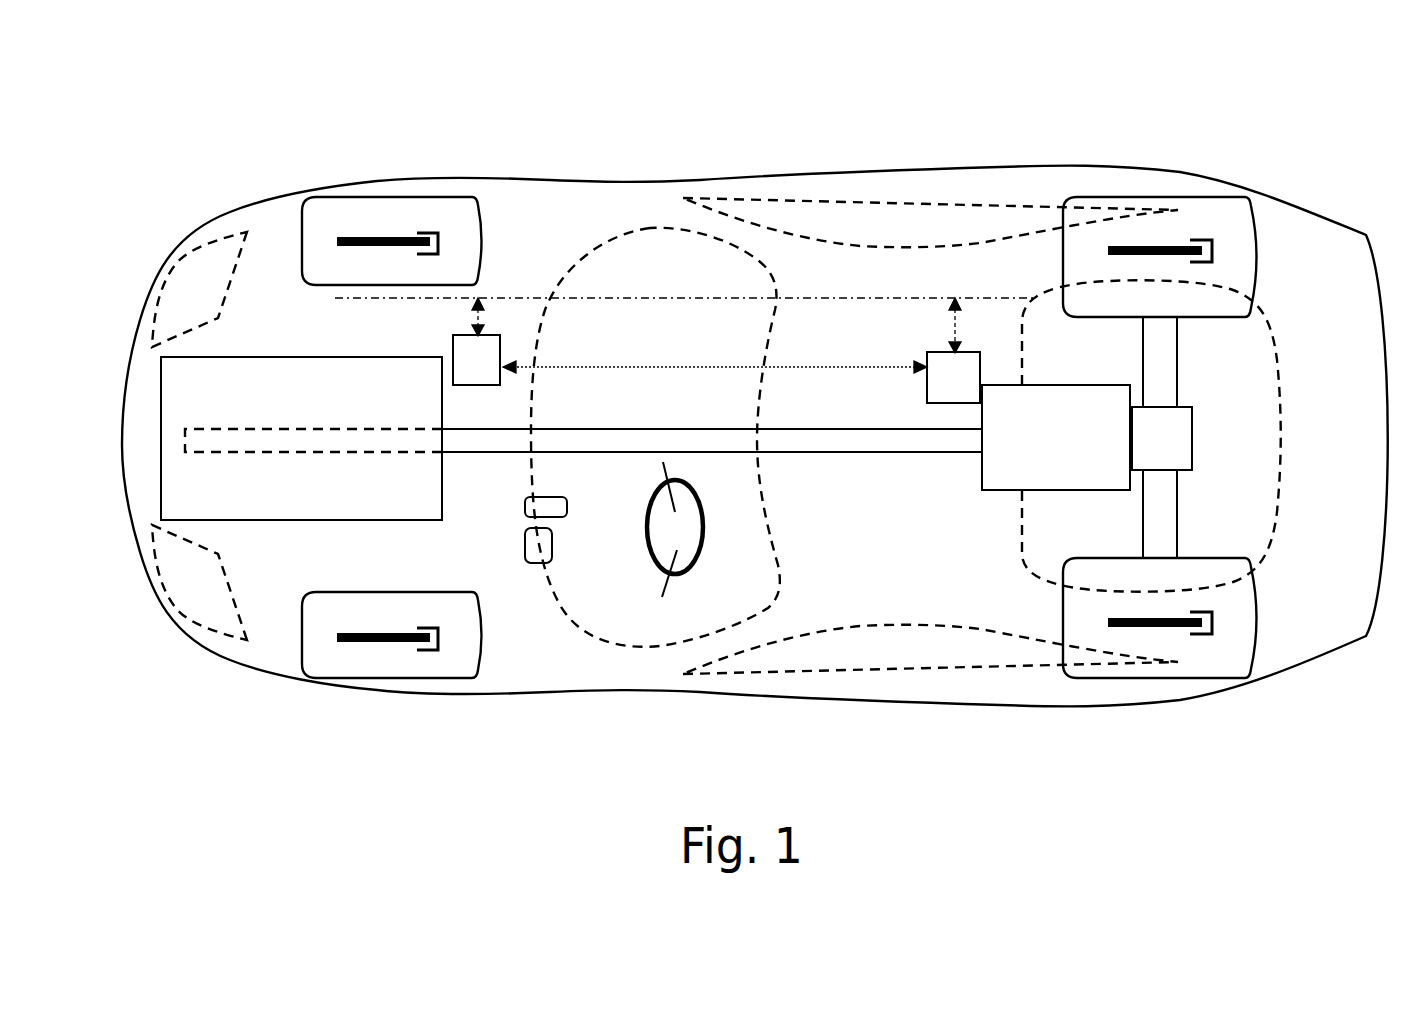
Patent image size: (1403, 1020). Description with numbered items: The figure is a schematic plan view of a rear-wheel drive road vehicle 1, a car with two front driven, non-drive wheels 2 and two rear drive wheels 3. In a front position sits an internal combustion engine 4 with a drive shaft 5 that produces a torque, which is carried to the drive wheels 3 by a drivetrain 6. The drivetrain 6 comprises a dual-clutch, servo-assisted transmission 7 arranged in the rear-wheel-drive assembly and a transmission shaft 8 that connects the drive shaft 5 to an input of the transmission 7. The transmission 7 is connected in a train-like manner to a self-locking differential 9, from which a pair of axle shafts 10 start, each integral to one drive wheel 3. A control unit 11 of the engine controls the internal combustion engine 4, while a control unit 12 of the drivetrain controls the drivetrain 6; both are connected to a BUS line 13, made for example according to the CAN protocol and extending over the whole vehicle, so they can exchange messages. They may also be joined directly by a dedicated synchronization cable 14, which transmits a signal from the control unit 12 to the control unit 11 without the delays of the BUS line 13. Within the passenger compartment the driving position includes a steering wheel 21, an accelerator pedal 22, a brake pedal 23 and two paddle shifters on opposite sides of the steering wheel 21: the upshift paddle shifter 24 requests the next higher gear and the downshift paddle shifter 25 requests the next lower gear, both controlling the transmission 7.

The road vehicle 1 is at (1262, 773).
The front driven wheels 2 is at (325, 213).
The rear drive wheels 3 is at (1243, 212).
The internal combustion engine 4 is at (170, 385).
The drive shaft 5 is at (287, 438).
The drivetrain 6 is at (795, 148).
The dual-clutch, servo-assisted transmission 7 is at (1060, 430).
The transmission shaft 8 is at (818, 442).
The self-locking differential 9 is at (1160, 437).
The axle shafts 10 is at (1163, 378).
The control unit of the internal combustion engine 11 is at (476, 341).
The control unit of the drivetrain 12 is at (953, 350).
The BUS line 13 is at (628, 258).
The synchronization cable 14 is at (710, 365).
The steering wheel 21 is at (705, 530).
The accelerator pedal 22 is at (538, 505).
The brake pedal 23 is at (540, 545).
The upshift paddle shifter 24 is at (663, 465).
The downshift paddle shifter 25 is at (660, 590).